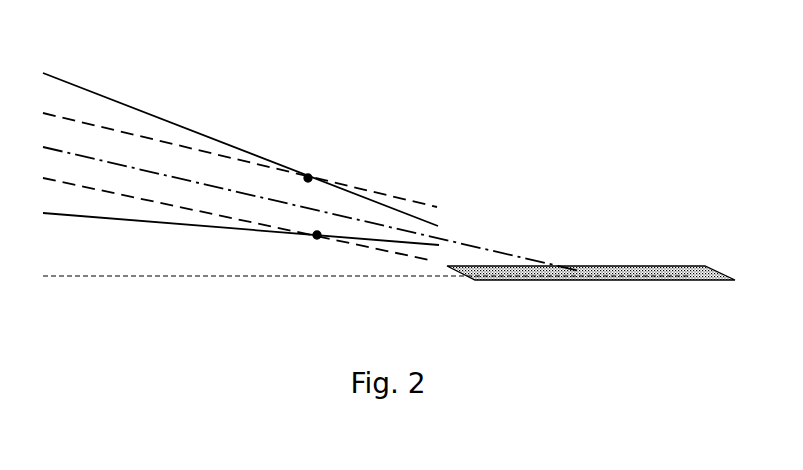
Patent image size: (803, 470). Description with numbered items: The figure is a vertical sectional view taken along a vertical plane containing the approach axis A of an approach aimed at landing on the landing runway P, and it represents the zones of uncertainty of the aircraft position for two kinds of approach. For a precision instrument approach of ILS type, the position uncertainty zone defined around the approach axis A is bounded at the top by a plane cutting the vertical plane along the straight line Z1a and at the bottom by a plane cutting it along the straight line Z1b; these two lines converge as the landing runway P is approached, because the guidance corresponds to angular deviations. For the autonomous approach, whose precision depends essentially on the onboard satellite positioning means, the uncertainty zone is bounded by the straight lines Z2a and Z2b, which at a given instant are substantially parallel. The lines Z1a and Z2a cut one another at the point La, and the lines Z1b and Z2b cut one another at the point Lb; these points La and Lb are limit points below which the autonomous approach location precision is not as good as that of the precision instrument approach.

The straight line Z1a is at (158, 118).
The straight line Z2a is at (235, 158).
The straight line Z1b is at (125, 223).
The straight line Z2b is at (205, 213).
The point La is at (308, 178).
The point Lb is at (317, 235).
The approach axis A is at (485, 250).
The landing runway P is at (643, 267).